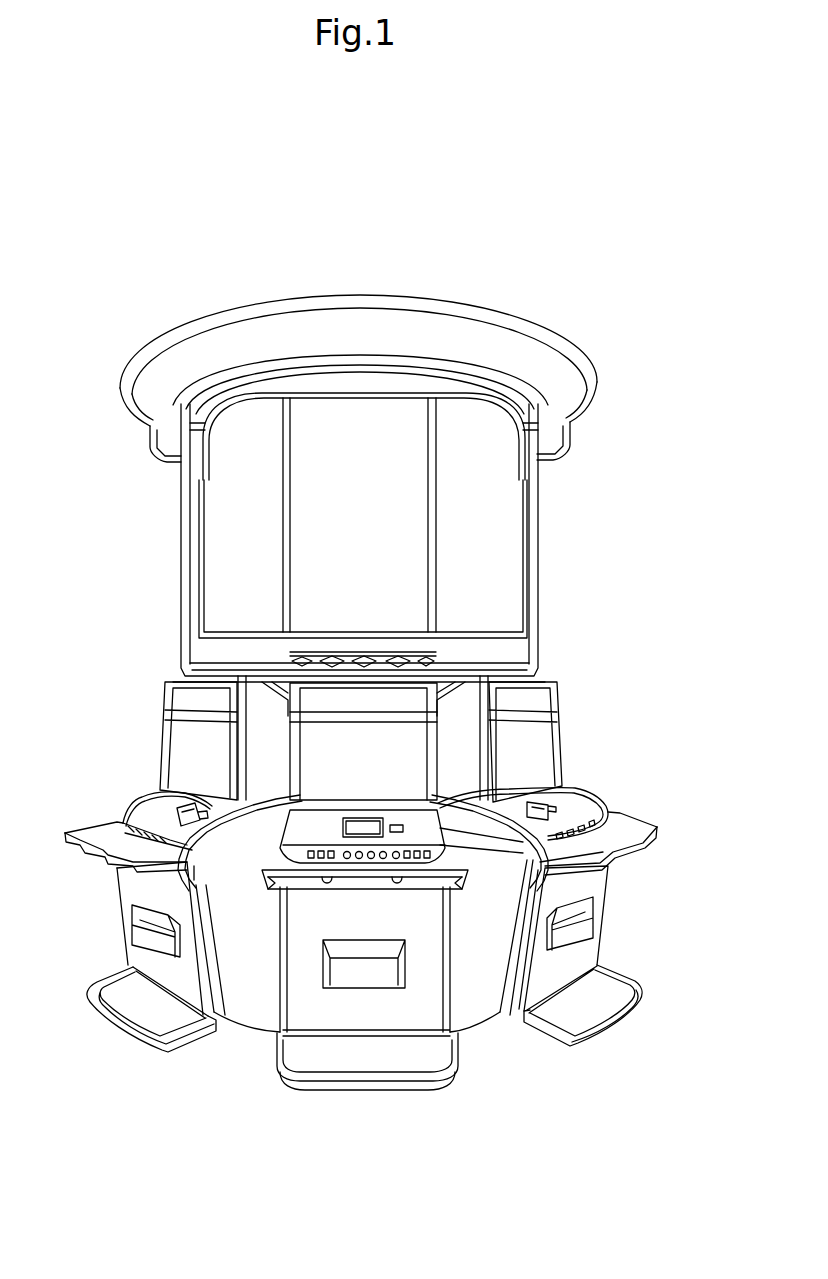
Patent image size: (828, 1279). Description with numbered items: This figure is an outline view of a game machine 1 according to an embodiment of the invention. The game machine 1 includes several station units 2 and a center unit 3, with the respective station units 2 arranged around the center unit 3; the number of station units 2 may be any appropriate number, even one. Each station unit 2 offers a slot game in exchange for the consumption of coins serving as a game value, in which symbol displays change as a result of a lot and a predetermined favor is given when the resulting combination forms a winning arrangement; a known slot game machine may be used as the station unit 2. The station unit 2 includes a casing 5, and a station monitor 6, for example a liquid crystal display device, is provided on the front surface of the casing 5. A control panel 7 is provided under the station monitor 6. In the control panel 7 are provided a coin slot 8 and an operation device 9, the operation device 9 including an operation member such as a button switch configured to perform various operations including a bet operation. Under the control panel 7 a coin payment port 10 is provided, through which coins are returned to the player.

The game machine 1 is at (544, 243).
The station unit 2 is at (110, 764).
The center unit 3 is at (580, 561).
The casing 5 is at (597, 883).
The station monitor 6 is at (537, 742).
The control panel 7 is at (599, 777).
The coin slot 8 is at (553, 803).
The operation device 9 is at (603, 815).
The coin payment port 10 is at (597, 920).